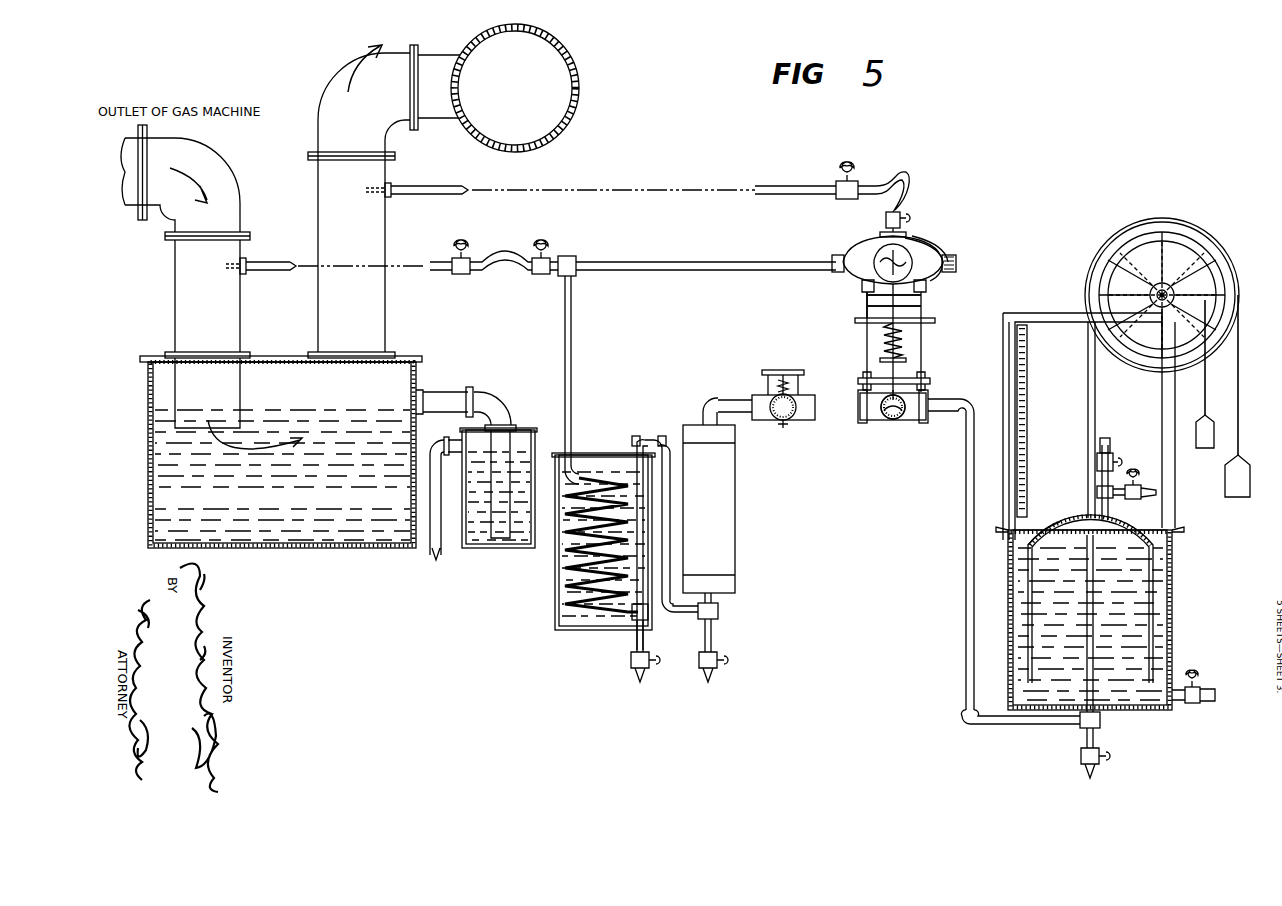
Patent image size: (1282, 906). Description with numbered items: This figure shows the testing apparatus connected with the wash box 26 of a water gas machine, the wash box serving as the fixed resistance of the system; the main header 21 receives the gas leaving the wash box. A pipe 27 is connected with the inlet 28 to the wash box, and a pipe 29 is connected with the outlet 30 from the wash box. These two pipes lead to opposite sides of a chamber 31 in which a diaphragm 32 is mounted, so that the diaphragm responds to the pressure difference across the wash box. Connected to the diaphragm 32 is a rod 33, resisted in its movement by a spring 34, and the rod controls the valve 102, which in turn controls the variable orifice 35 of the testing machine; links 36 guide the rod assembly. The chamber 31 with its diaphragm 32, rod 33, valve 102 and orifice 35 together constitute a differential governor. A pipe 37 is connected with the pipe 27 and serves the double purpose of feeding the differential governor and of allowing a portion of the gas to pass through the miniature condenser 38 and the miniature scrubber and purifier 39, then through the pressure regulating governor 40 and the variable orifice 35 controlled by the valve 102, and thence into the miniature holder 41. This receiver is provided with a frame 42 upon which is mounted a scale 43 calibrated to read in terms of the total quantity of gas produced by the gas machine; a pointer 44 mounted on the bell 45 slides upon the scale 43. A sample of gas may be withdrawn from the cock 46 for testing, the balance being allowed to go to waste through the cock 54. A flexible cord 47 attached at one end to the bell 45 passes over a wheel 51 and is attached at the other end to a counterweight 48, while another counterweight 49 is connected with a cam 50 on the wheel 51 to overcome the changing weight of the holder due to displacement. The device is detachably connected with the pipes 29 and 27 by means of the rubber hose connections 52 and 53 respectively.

The main header 21 is at (572, 108).
The wash box 26 is at (148, 443).
The pipe 27 is at (432, 262).
The inlet 28 is at (175, 246).
The pipe 29 is at (452, 186).
The outlet 30 is at (395, 168).
The chamber 31 is at (920, 238).
The diaphragm 32 is at (875, 258).
The rod 33 is at (866, 296).
The spring 34 is at (884, 339).
The orifice 35 is at (898, 420).
The links 36 is at (924, 296).
The pipe 37 is at (1135, 712).
The miniature condenser 38 is at (594, 632).
The miniature scrubber and purifier 39 is at (737, 568).
The pressure regulating governor 40 is at (800, 420).
The miniature holder 41 is at (1175, 590).
The frame 42 is at (1003, 355).
The scale 43 is at (1027, 392).
The pointer 44 is at (1036, 516).
The bell 45 is at (1140, 522).
The cock 46 is at (1138, 484).
The flexible cord 47 is at (1258, 372).
The counterweight 48 is at (1224, 483).
The counterweight 49 is at (1196, 445).
The cam 50 is at (1152, 245).
The wheel 51 is at (1180, 238).
The rubber hose connection 52 is at (910, 166).
The rubber hose connection 53 is at (502, 258).
The cock 54 is at (1112, 456).
The valve 102 is at (912, 410).